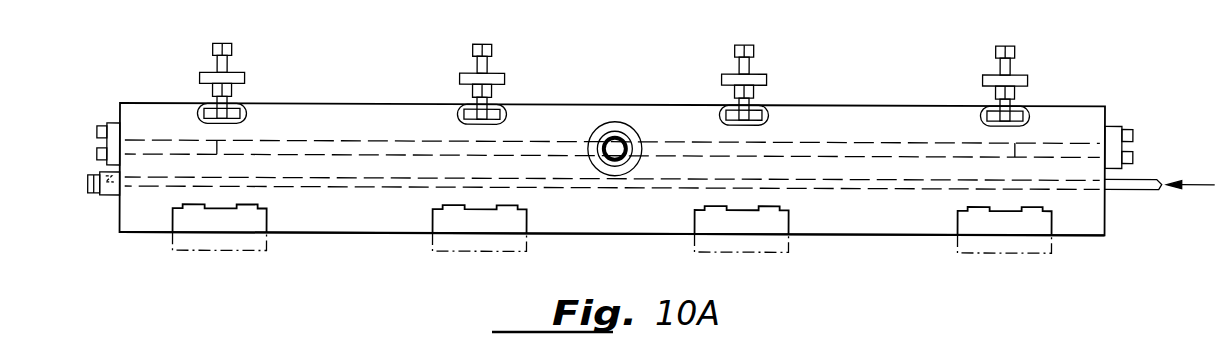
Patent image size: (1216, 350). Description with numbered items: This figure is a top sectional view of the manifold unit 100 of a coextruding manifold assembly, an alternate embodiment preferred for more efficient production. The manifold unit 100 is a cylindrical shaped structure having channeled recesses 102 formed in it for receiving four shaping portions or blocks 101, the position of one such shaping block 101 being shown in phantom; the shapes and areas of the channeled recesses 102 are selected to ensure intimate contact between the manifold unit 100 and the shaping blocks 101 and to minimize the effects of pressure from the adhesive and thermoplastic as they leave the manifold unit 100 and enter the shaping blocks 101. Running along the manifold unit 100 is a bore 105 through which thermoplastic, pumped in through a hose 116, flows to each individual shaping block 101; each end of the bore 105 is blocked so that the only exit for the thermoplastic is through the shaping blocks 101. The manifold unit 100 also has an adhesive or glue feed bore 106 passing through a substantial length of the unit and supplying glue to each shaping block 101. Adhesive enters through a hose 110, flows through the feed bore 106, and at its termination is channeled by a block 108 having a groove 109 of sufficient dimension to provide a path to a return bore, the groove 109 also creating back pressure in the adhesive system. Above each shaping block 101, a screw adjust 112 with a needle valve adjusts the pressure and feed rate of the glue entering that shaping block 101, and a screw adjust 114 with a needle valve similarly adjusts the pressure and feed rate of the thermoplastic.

The manifold unit 100 is at (362, 119).
The shaping block 101 is at (433, 251).
The channeled recess 102 is at (1053, 216).
The bore 105 is at (863, 145).
The adhesive feed bore 106 is at (892, 182).
The block 108 is at (104, 196).
The groove 109 is at (88, 167).
The hose 110 is at (1137, 184).
The screw adjust 112 is at (231, 92).
The screw adjust 114 is at (223, 62).
The hose 116 is at (615, 131).